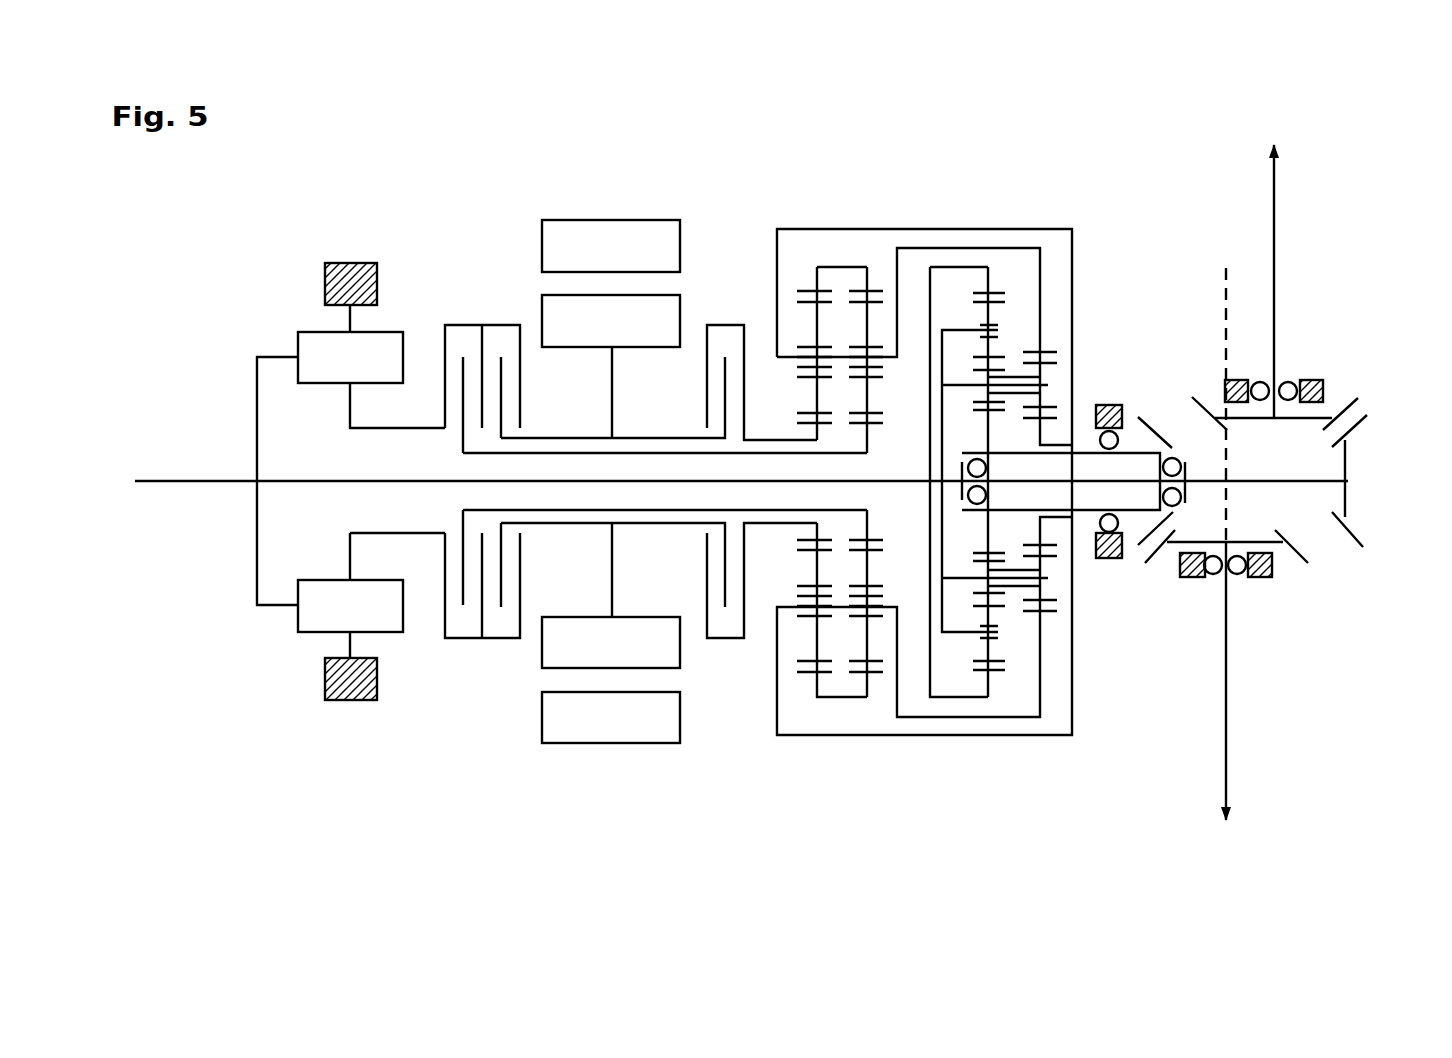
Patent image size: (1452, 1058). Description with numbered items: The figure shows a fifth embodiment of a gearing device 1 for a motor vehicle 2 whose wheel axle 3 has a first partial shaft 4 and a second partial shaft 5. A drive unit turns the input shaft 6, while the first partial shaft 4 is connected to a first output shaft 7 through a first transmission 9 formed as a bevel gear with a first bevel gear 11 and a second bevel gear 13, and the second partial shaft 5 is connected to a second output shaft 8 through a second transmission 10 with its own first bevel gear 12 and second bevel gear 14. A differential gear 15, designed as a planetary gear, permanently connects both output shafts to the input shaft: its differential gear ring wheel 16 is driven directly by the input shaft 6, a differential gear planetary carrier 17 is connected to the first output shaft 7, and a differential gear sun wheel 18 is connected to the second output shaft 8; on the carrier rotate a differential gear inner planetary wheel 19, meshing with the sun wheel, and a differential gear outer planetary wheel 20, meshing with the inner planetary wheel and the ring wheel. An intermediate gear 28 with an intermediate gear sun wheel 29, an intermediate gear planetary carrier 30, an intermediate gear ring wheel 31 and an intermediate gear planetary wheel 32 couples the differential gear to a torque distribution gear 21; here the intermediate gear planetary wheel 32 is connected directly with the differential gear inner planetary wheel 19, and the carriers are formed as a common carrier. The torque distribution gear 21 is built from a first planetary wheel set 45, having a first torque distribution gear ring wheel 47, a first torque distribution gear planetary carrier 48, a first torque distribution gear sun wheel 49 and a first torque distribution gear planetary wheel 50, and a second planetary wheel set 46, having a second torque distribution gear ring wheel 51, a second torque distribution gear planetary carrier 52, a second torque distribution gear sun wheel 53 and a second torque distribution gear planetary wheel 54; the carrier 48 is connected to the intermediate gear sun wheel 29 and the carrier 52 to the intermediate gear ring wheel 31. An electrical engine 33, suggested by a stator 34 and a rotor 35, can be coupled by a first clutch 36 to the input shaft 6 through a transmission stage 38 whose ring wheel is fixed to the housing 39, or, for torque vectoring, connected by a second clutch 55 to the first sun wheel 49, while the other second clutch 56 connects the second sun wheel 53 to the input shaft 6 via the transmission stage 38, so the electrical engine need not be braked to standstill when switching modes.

The gearing device 1 is at (1190, 166).
The motor vehicle 2 is at (1346, 203).
The wheel axle 3 is at (1346, 285).
The first partial shaft 4 is at (1275, 242).
The second partial shaft 5 is at (1228, 737).
The input shaft 6 is at (186, 475).
The first output shaft 7 is at (1198, 477).
The second output shaft 8 is at (1092, 452).
The first transmission 9 is at (1382, 394).
The second transmission 10 is at (1157, 587).
The first bevel gear 11 is at (1347, 463).
The first bevel gear 12 is at (1140, 418).
The second bevel gear 13 is at (1353, 402).
The second bevel gear 14 is at (1303, 563).
The differential gear 15 is at (984, 252).
The differential gear ring wheel 16 is at (998, 292).
The differential gear planetary carrier 17 is at (952, 328).
The differential gear sun wheel 18 is at (983, 406).
The differential gear inner planetary wheel 19 is at (980, 370).
The differential gear outer planetary wheel 20 is at (1002, 303).
The torque distribution gear 21 is at (838, 187).
The intermediate gear 28 is at (1023, 597).
The intermediate gear sun wheel 29 is at (1050, 543).
The intermediate gear planetary carrier 30 is at (1050, 598).
The intermediate gear ring wheel 31 is at (1046, 615).
The intermediate gear planetary wheel 32 is at (1023, 692).
The electrical engine 33 is at (616, 207).
The stator 34 is at (565, 230).
The rotor 35 is at (565, 305).
The first clutch 36 is at (455, 288).
The transmission stage 38 is at (305, 340).
The housing 39 is at (350, 263).
The first planetary wheel set 45 is at (790, 187).
The second planetary wheel set 46 is at (872, 187).
The first torque distribution gear ring wheel 47 is at (808, 290).
The first torque distribution gear planetary carrier 48 is at (777, 279).
The first torque distribution gear sun wheel 49 is at (815, 425).
The first torque distribution gear planetary wheel 50 is at (805, 302).
The second torque distribution gear ring wheel 51 is at (870, 292).
The second torque distribution gear planetary carrier 52 is at (922, 248).
The second torque distribution gear sun wheel 53 is at (870, 540).
The second torque distribution gear planetary wheel 54 is at (870, 552).
The second clutch 55 is at (720, 697).
The second clutch 56 is at (482, 697).